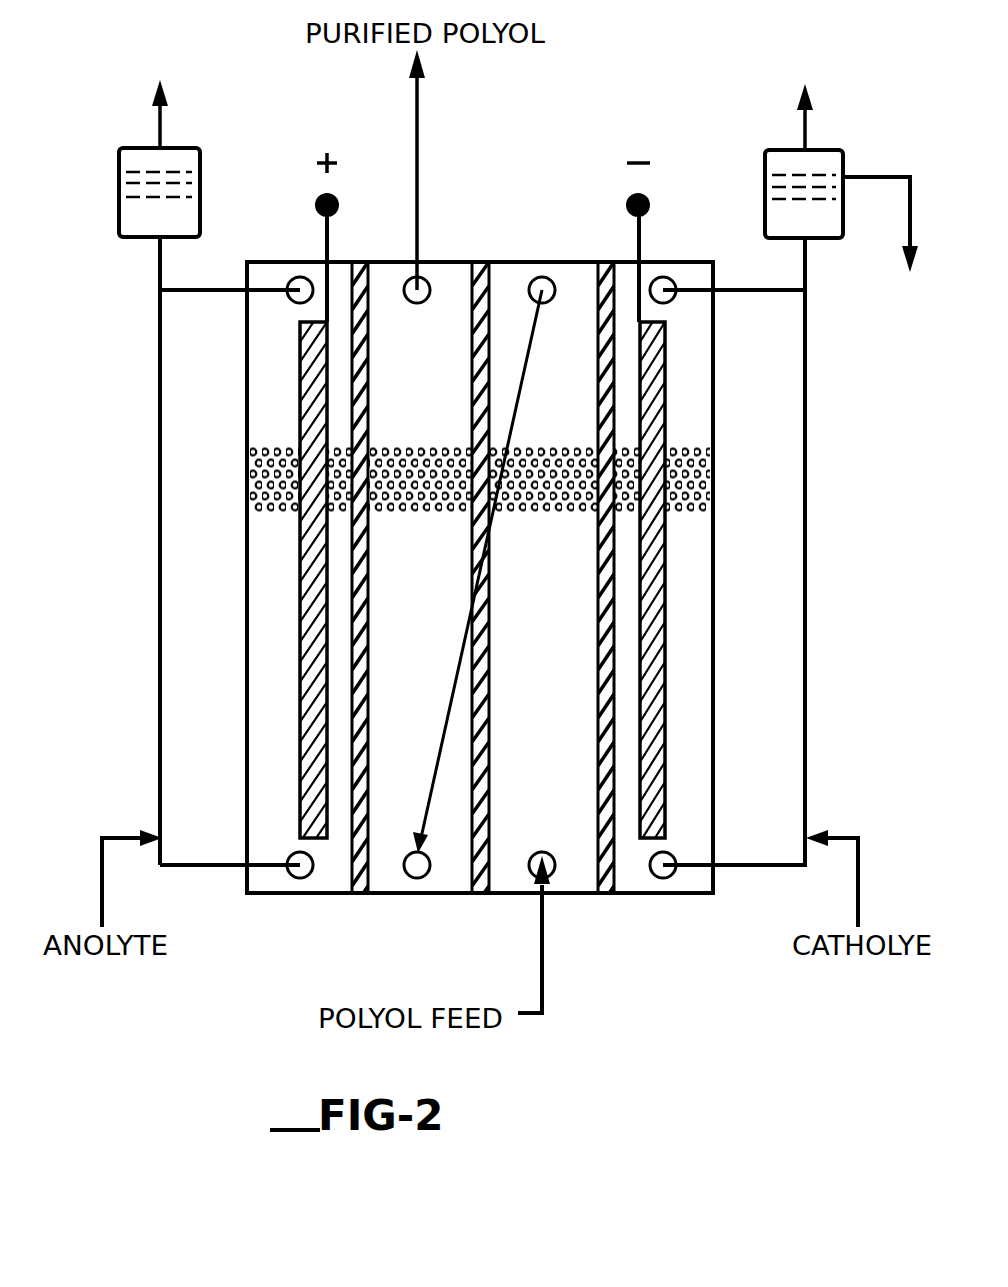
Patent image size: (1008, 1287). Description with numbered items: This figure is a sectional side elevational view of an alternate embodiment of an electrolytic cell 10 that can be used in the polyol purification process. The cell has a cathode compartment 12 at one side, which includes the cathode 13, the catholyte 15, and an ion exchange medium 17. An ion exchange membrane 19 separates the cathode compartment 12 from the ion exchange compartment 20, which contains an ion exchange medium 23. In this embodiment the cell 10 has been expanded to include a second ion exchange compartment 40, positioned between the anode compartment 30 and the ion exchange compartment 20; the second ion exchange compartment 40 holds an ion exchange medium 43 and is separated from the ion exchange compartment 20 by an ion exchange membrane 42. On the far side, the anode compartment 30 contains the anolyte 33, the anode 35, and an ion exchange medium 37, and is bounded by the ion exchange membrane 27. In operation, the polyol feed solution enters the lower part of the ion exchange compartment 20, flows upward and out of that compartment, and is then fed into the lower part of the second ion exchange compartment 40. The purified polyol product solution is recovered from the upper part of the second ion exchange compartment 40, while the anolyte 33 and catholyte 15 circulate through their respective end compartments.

The electrolytic cell 10 is at (238, 908).
The cathode compartment 12 is at (700, 796).
The cathode 13 is at (665, 393).
The catholyte 15 is at (826, 232).
The ion exchange medium 17 is at (683, 507).
The ion exchange membrane 19 is at (598, 800).
The ion exchange compartment 20 is at (554, 666).
The ion exchange medium 23 is at (544, 510).
The ion exchange membrane 27 is at (368, 746).
The anode compartment 30 is at (291, 718).
The anolyte 33 is at (178, 231).
The anode 35 is at (300, 347).
The ion exchange medium 37 is at (274, 507).
The second ion exchange compartment 40 is at (433, 646).
The ion exchange membrane 42 is at (490, 732).
The ion exchange medium 43 is at (423, 510).